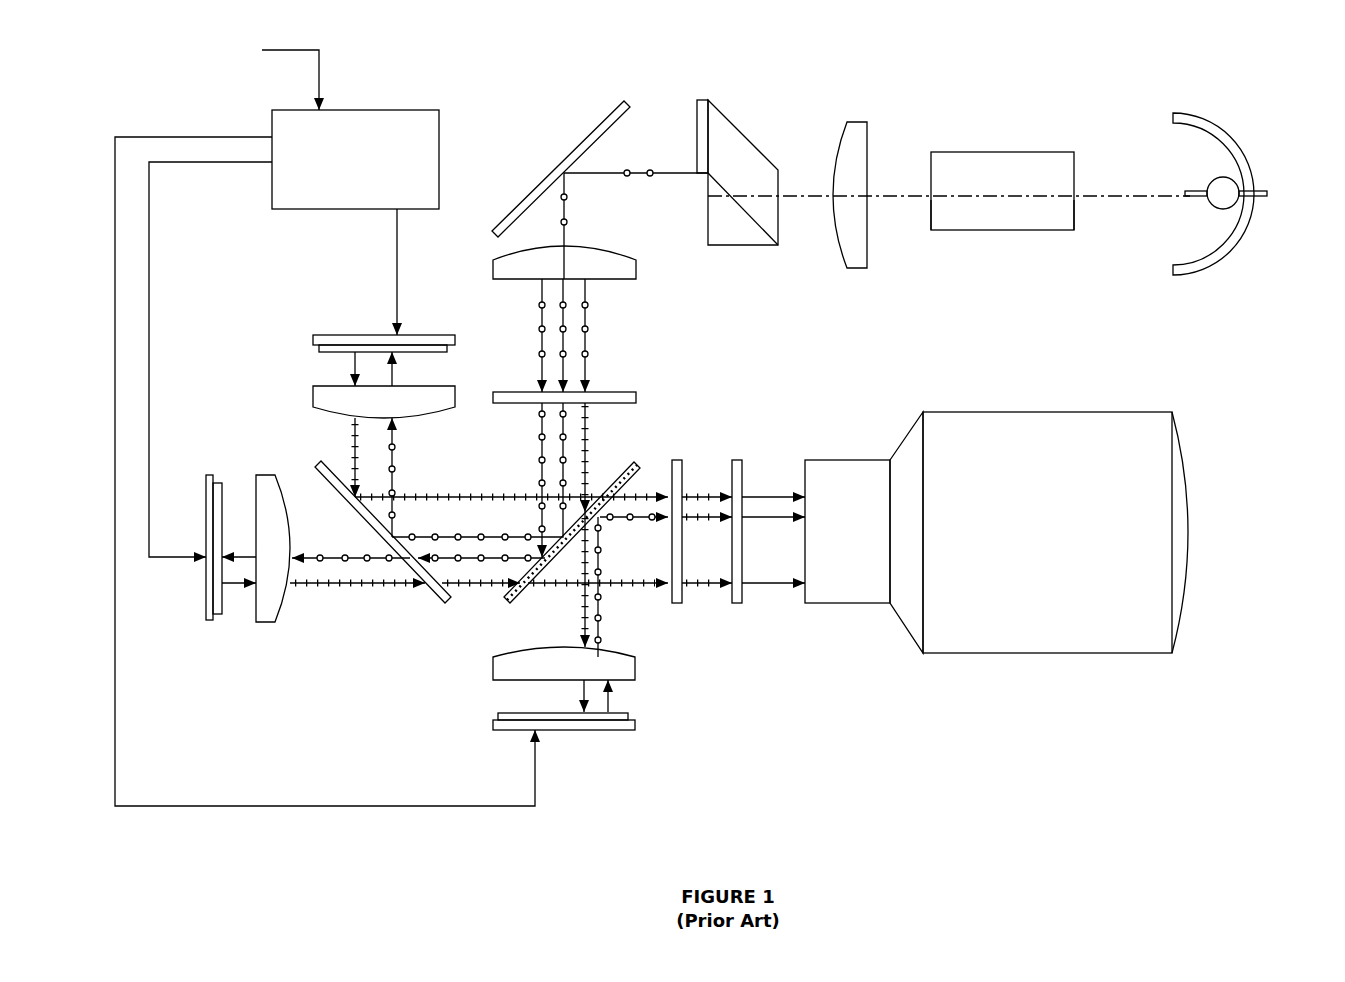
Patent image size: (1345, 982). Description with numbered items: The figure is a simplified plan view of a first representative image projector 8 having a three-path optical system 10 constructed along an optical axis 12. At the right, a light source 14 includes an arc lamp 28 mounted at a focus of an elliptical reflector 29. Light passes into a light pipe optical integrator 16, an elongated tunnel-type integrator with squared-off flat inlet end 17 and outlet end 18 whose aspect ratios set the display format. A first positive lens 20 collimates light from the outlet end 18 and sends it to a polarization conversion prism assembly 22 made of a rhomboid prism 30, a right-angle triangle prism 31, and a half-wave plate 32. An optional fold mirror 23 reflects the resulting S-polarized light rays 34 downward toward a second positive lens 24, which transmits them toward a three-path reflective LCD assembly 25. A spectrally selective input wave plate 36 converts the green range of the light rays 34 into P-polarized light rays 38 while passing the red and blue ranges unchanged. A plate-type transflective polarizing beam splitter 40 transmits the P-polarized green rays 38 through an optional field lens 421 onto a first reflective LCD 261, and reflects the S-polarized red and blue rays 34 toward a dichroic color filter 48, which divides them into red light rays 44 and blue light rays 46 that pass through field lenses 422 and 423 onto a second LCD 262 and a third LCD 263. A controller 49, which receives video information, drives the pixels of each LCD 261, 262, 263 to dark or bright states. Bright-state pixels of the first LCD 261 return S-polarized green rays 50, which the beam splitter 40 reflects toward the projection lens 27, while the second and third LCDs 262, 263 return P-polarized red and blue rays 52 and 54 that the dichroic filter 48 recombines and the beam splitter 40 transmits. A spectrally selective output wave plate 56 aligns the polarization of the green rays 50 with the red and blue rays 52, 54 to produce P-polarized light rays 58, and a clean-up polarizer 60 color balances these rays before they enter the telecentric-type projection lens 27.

The image projector 8 is at (1165, 722).
The three-path optical system 10 is at (490, 103).
The optical axis 12 is at (1138, 196).
The light source 14 is at (1246, 185).
The light pipe optical integrator 16 is at (985, 165).
The inlet end 17 is at (1075, 228).
The outlet end 18 is at (930, 228).
The first positive lens 20 is at (860, 125).
The polarization conversion prism assembly 22 is at (725, 167).
The fold mirror 23 is at (600, 128).
The second positive lens 24 is at (618, 279).
The three-path reflective LCD assembly 25 is at (360, 686).
The projection lens 27 is at (1050, 645).
The arc lamp 28 is at (1218, 200).
The elliptical reflector 29 is at (1243, 230).
The 45° rhomboid prism 30 is at (740, 150).
The right-angle triangle prism 31 is at (725, 237).
The half-wave plate 32 is at (697, 137).
The S-polarized light rays 34 is at (670, 180).
The spectrally selective input wave plate 36 is at (628, 390).
The P-polarized light rays 38 is at (588, 432).
The transflective polarizing beam splitter 40 is at (522, 595).
The R light rays 44 is at (342, 555).
The B light rays 46 is at (394, 472).
The dichroic color filter 48 is at (435, 592).
The controller 49 is at (292, 118).
The S-polarized G light rays 50 is at (640, 518).
The P-polarized R light rays 52 is at (335, 585).
The P-polarized B light rays 54 is at (355, 447).
The spectrally selective output wave plate 56 is at (677, 603).
The P-polarized G, R, and B light rays 58 is at (710, 580).
The clean-up polarizer 60 is at (737, 603).
The first reflective liquid crystal display 261 is at (497, 723).
The second reflective liquid crystal display 262 is at (216, 620).
The third reflective liquid crystal display 263 is at (328, 340).
The first field lens 421 is at (503, 656).
The second field lens 422 is at (268, 620).
The third field lens 423 is at (318, 388).